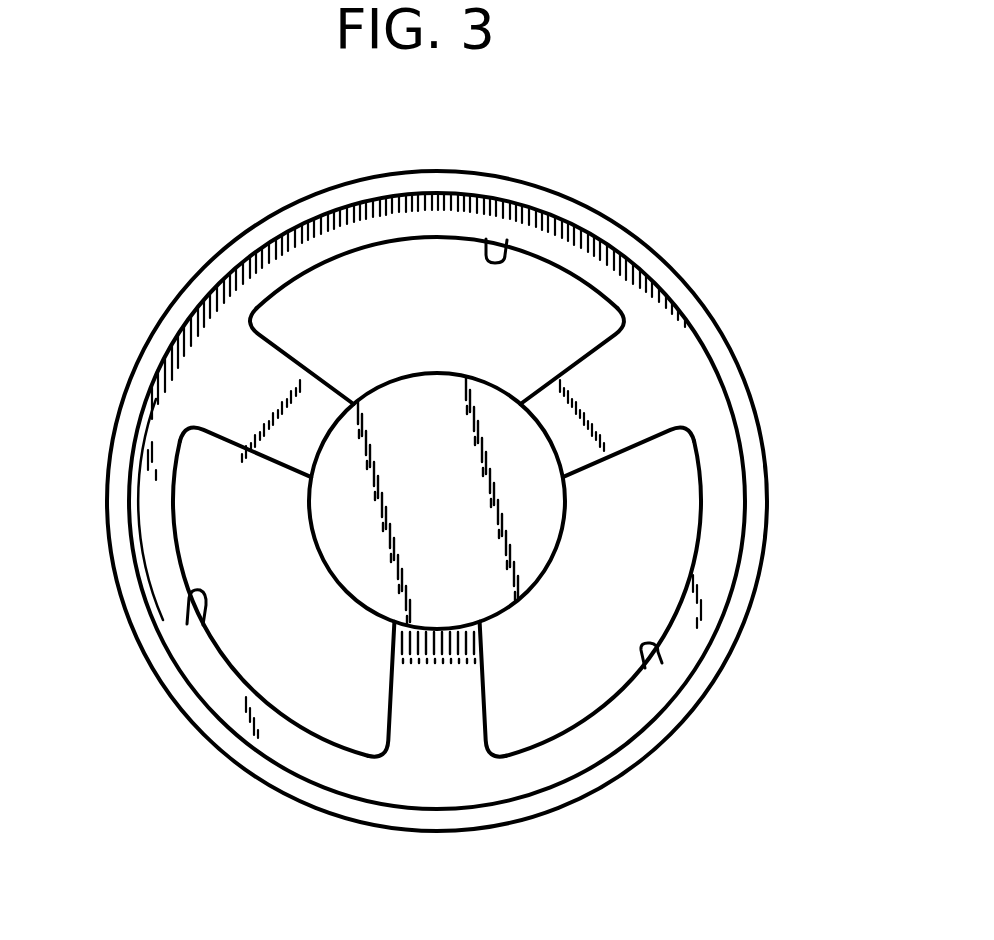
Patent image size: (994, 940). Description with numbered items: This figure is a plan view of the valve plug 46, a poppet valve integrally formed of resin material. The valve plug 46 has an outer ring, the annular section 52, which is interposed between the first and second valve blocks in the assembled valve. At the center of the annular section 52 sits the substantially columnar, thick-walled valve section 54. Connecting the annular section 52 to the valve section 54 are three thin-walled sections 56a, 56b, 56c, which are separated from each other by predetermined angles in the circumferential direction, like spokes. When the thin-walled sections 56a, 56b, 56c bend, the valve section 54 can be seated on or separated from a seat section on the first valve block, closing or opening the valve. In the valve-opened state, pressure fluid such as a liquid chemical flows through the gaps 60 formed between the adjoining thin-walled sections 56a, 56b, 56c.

The valve plug 46 is at (613, 222).
The annular section 52 is at (745, 426).
The valve section 54 is at (490, 594).
The thin-walled section 56a is at (620, 392).
The thin-walled section 56b is at (433, 736).
The thin-walled section 56c is at (243, 390).
The gap 60 is at (504, 246).